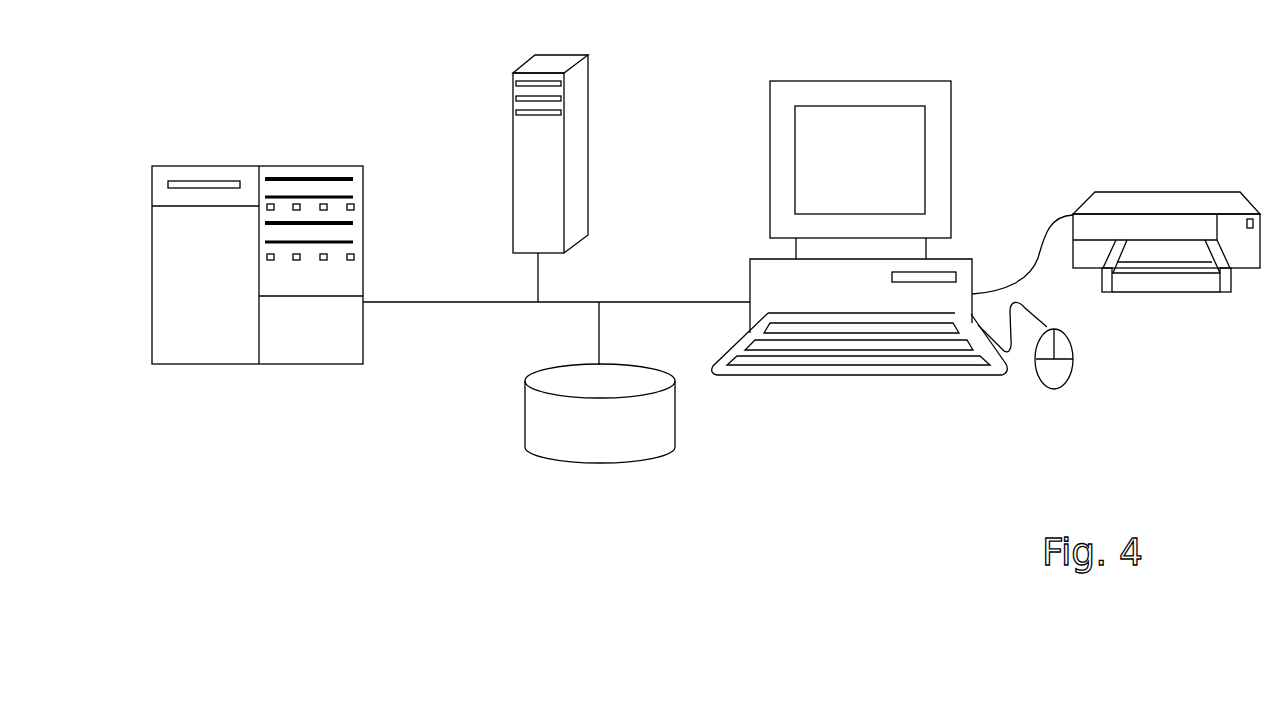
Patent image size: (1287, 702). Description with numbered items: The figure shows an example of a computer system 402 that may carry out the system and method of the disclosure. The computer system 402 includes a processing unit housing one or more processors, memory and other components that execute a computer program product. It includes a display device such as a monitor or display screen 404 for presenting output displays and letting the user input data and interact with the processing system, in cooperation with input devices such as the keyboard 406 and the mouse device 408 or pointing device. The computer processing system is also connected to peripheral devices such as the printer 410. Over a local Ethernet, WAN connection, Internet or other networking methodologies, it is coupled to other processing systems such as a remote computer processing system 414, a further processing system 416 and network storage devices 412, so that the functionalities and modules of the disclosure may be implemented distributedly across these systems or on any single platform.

The computer system 402 is at (750, 285).
The display screen 404 is at (951, 177).
The keyboard 406 is at (920, 377).
The mouse device 408 is at (1073, 374).
The printer 410 is at (1165, 192).
The network storage devices 412 is at (620, 463).
The remote computer processing system 414 is at (588, 142).
The processing system 416 is at (303, 166).